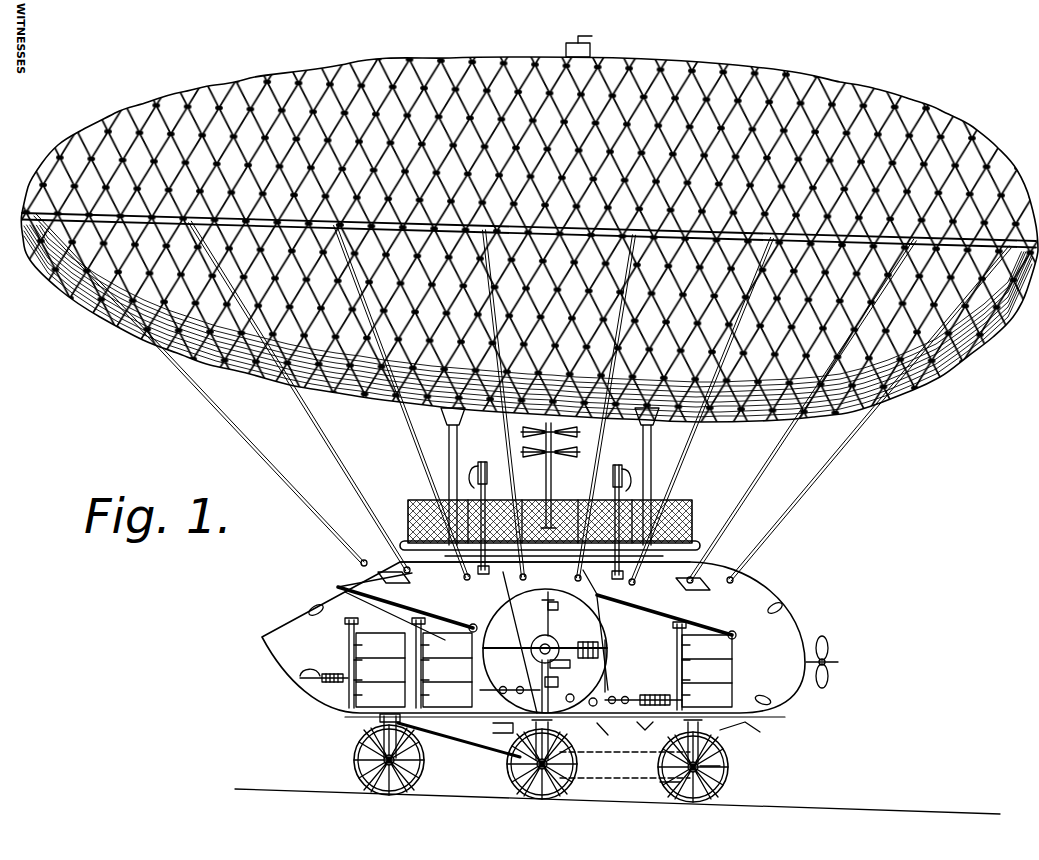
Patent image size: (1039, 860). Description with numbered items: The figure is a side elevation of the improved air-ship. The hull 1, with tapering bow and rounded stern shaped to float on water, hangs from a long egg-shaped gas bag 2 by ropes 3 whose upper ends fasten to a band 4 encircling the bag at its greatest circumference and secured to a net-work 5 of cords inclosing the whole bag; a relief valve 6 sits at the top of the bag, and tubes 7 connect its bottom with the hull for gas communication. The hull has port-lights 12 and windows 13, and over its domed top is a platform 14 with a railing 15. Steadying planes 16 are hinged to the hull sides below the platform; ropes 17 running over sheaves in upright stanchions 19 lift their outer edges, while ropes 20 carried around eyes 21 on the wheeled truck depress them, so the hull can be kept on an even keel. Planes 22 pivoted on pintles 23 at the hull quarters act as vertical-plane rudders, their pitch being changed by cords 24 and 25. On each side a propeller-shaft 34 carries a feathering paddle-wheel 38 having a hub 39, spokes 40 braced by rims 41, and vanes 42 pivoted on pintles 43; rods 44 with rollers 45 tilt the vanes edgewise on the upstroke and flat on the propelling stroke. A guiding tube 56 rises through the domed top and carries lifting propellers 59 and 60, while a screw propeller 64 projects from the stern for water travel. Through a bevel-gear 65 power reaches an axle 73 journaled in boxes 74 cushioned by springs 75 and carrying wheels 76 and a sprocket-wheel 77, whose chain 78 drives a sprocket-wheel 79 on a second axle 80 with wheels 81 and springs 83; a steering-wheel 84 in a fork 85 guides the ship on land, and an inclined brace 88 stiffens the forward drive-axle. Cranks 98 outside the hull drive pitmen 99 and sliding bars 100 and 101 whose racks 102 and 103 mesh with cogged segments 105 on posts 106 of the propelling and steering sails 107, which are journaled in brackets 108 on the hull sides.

The hull 1 is at (762, 566).
The gas bag 2 is at (529, 235).
The ropes 3 is at (522, 399).
The band 4 is at (906, 236).
The net-work 5 is at (850, 296).
The relief valve 6 is at (563, 49).
The tubes 7 is at (552, 476).
The port-lights 12 is at (309, 610).
The windows 13 is at (410, 580).
The platform 14 is at (694, 541).
The railing 15 is at (692, 518).
The steadying planes 16 is at (542, 563).
The ropes 17 is at (487, 479).
The upright stanchions 19 is at (478, 464).
The ropes 20 is at (676, 586).
The eyes 21 is at (592, 583).
The planes 22 is at (535, 611).
The pintles 23 is at (741, 630).
The cords 24 is at (405, 548).
The cords 25 is at (400, 620).
The propeller-shafts 34 is at (540, 640).
The propeller-wheel 38 is at (562, 642).
The hub 39 is at (541, 672).
The spokes 40 is at (554, 686).
The rims 41 is at (558, 610).
The vanes 42 is at (546, 606).
The pintles 43 is at (589, 645).
The rods 44 is at (608, 664).
The rollers 45 is at (562, 672).
The guiding and supporting tube 56 is at (553, 460).
The propeller 59 is at (581, 433).
The propeller 60 is at (581, 453).
The screw propeller 64 is at (826, 648).
The bevel-gear 65 is at (643, 730).
The axle 73 is at (724, 768).
The boxes 74 is at (720, 756).
The springs 75 is at (750, 730).
The wheels 76 is at (712, 790).
The sprocket-wheel 77 is at (666, 779).
The chain 78 is at (640, 777).
The sprocket-wheel 79 is at (612, 753).
The axle 80 is at (520, 782).
The wheels 81 is at (520, 760).
The springs 83 is at (506, 732).
The steering-wheel 84 is at (355, 763).
The fork 85 is at (382, 736).
The inclined brace 88 is at (470, 742).
The cranks 98 is at (581, 692).
The pitmen 99 is at (503, 686).
The bar 100 is at (643, 693).
The bar 101 is at (508, 698).
The rack 102 is at (656, 694).
The rack 103 is at (306, 674).
The cogged segments 105 is at (330, 672).
The posts 106 is at (352, 644).
The sails 107 is at (544, 670).
The brackets 108 is at (345, 624).